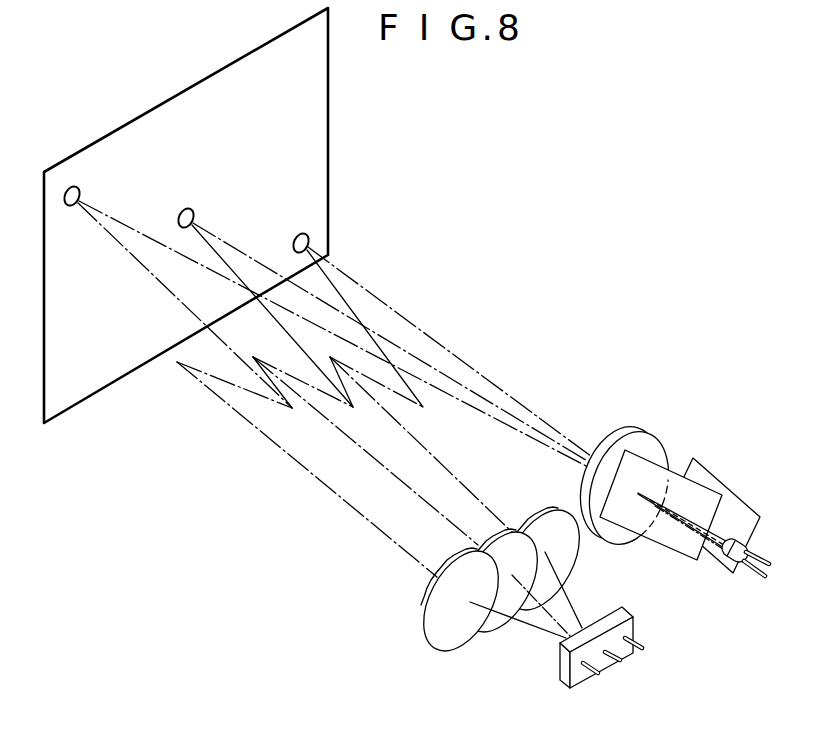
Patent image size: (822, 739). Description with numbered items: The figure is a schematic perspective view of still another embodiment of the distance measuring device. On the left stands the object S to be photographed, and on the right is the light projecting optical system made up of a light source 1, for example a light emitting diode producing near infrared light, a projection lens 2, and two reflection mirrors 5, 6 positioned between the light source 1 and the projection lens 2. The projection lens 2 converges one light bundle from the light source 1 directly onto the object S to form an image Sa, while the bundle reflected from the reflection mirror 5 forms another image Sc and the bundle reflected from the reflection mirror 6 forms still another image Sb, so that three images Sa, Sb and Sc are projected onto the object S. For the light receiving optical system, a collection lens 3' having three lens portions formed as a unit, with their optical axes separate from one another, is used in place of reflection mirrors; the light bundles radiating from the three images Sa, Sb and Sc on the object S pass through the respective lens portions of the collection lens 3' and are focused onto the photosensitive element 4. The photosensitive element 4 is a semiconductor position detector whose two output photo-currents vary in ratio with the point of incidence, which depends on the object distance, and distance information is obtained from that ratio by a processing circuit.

The light source 1 is at (727, 560).
The projection lens 2 is at (646, 430).
The collection lens 3' is at (501, 594).
The photosensitive element 4 is at (579, 672).
The reflection mirror 5 is at (658, 538).
The reflection mirror 6 is at (697, 470).
The object S is at (116, 380).
The image Sa is at (187, 206).
The image Sb is at (84, 189).
The image Sc is at (303, 230).